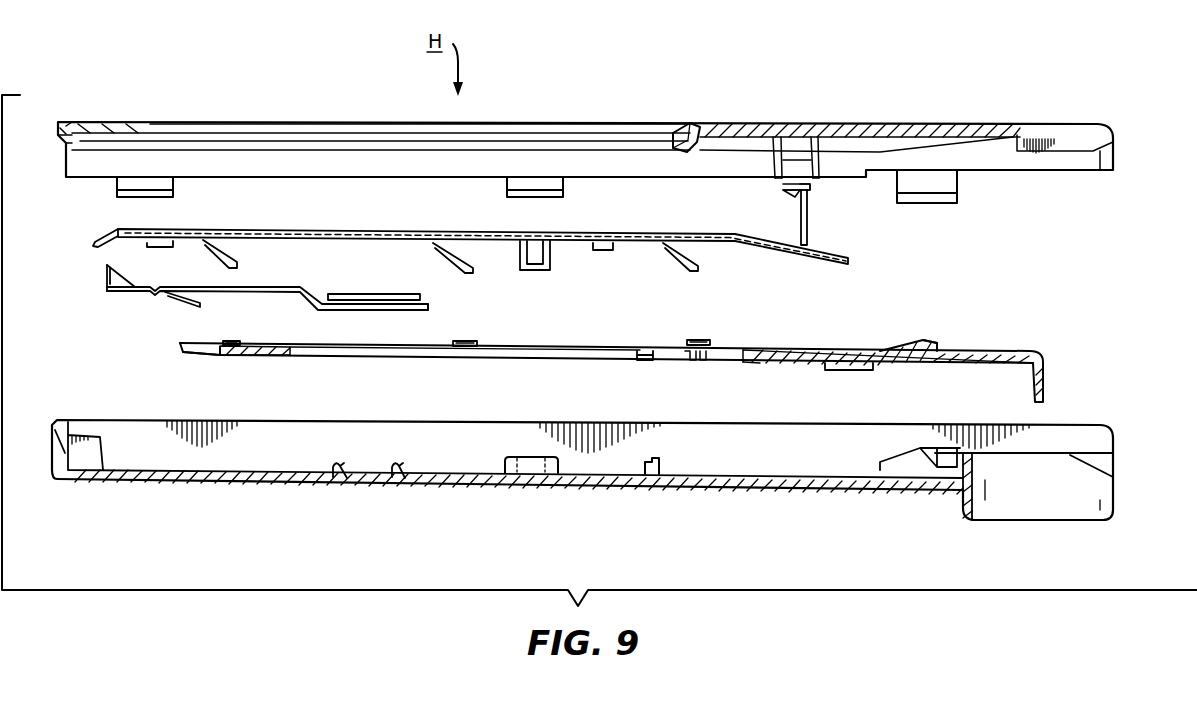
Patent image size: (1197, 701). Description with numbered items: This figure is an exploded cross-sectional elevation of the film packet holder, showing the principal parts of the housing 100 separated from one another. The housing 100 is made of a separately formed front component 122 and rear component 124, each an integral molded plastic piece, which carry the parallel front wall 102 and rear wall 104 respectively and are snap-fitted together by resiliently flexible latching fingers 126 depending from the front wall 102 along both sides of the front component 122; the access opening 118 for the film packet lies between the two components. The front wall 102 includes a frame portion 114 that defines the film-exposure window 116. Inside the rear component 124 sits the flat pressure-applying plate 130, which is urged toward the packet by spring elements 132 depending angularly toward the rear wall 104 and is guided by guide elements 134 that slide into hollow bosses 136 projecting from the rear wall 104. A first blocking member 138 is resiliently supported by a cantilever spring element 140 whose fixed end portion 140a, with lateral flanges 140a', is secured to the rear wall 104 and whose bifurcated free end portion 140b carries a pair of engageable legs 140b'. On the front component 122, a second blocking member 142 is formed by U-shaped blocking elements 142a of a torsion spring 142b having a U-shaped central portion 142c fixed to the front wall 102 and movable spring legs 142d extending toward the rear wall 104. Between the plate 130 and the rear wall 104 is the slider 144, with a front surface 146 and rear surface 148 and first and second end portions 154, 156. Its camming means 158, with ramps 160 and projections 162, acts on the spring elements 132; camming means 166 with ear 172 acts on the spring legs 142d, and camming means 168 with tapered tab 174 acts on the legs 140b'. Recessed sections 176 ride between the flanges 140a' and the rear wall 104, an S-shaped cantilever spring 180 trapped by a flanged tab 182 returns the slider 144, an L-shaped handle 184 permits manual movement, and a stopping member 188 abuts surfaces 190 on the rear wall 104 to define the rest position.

The housing 100 is at (1045, 190).
The front wall 102 is at (853, 121).
The rear wall 104 is at (762, 494).
The frame portion 114 is at (344, 122).
The film-exposure window 116 is at (680, 124).
The access opening 118 is at (1128, 190).
The front component 122 is at (980, 116).
The rear component 124 is at (846, 500).
The latching fingers 126 is at (160, 196).
The pressure-applying plate 130 is at (275, 220).
The spring elements 132 is at (212, 252).
The guide elements 134 is at (540, 271).
The hollow bosses 136 is at (522, 456).
The first blocking member 138 is at (107, 279).
The cantilever spring element 140 is at (272, 283).
The fixed end portion 140a is at (379, 319).
The flanges 140a' is at (361, 278).
The free end portion 140b is at (81, 298).
The engageable legs 140b' is at (161, 311).
The second blocking member 142 is at (760, 192).
The U-shaped blocking elements 142a is at (782, 199).
The torsion spring 142b is at (808, 187).
The U-shaped central portion 142c is at (780, 186).
The spring legs 142d is at (808, 230).
The slider 144 is at (830, 349).
The front surface 146 is at (795, 346).
The rear surface 148 is at (757, 364).
The first end portion 154 is at (880, 347).
The second end portion 156 is at (266, 357).
The camming means 158 is at (336, 319).
The ramps 160 is at (252, 335).
The projections 162 is at (229, 340).
The first end portion camming means 166 is at (904, 404).
The second end portion camming means 168 is at (234, 402).
The ear 172 is at (826, 369).
The tapered tab 174 is at (184, 353).
The recessed sections 176 is at (350, 354).
The S-shaped cantilever spring 180 is at (638, 346).
The flanged tab 182 is at (660, 462).
The L-shaped handle 184 is at (1008, 350).
The stopping member 188 is at (937, 341).
The opposing surfaces 190 is at (930, 463).